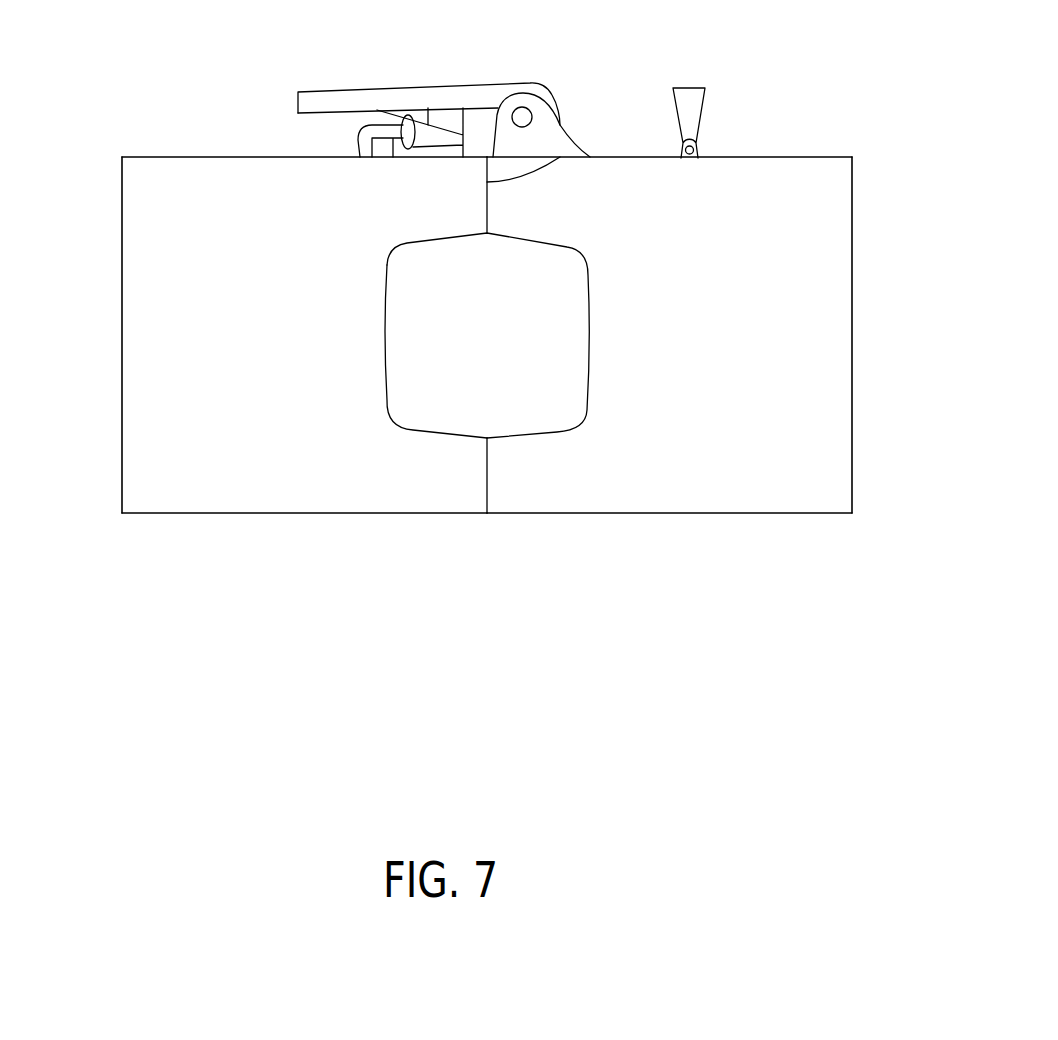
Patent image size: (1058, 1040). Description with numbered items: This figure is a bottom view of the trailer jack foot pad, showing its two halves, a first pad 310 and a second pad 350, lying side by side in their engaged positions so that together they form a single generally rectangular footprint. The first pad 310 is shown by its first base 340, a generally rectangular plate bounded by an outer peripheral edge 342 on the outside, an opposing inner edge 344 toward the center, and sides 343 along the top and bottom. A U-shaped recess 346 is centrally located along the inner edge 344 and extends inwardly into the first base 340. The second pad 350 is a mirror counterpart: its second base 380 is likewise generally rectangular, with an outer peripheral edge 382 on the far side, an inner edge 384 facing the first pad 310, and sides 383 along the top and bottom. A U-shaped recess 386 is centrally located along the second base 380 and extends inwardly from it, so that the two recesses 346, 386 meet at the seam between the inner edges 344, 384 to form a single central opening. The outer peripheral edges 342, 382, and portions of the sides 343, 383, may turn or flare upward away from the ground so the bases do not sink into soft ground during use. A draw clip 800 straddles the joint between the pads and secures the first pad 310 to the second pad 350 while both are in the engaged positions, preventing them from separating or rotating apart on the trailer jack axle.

The first pad 310 is at (175, 156).
The first base 340 is at (283, 348).
The outer peripheral edge 342 is at (122, 248).
The sides 343 is at (245, 157).
The inner edge 344 is at (487, 477).
The U-shaped recess 346 is at (385, 365).
The second pad 350 is at (853, 208).
The second base 380 is at (770, 393).
The outer peripheral edge 382 is at (853, 333).
The sides 383 is at (742, 157).
The inner edge 384 is at (558, 157).
The U-shaped recess 386 is at (590, 327).
The draw clip 800 is at (428, 97).